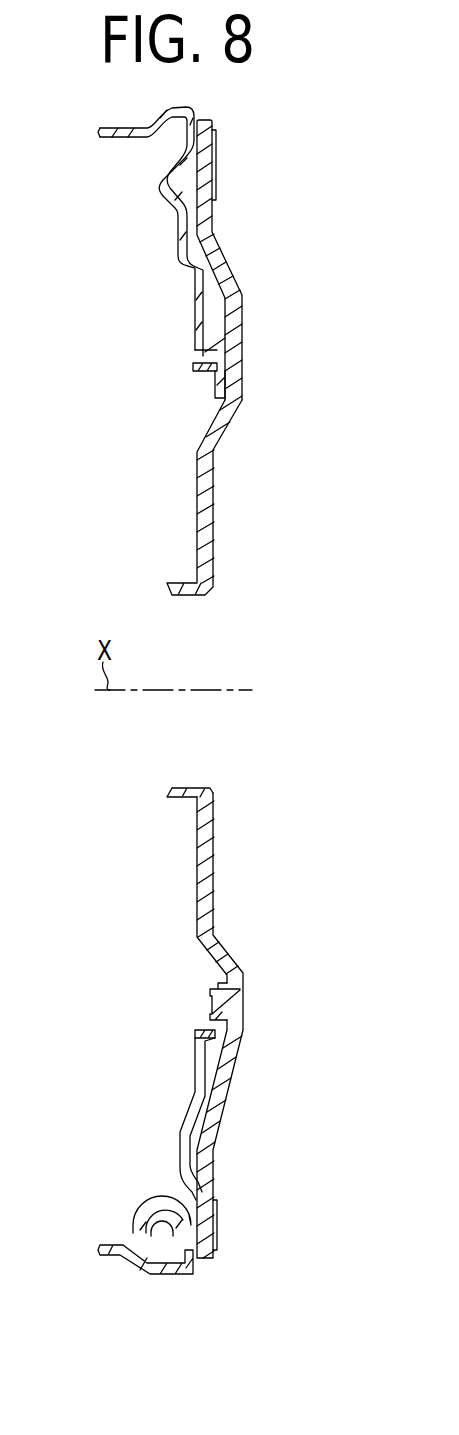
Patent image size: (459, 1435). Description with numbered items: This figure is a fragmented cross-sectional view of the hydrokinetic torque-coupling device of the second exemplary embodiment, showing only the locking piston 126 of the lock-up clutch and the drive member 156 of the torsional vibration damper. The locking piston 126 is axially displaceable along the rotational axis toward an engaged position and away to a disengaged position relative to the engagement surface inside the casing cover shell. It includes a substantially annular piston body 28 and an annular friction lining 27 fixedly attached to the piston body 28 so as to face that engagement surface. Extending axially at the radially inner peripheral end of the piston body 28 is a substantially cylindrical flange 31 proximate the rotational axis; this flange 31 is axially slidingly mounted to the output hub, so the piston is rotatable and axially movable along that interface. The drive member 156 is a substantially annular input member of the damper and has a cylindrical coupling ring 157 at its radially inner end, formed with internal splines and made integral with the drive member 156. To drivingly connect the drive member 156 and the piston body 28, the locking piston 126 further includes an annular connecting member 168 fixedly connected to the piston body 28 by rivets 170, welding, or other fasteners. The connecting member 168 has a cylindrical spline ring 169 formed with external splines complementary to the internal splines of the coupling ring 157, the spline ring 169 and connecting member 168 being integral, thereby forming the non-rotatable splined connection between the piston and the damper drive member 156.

The annular friction lining 27 is at (215, 157).
The drive member 156 is at (176, 305).
The coupling ring 157 is at (218, 348).
The cylindrical spline ring 169 is at (195, 367).
The annular connecting member 168 is at (217, 386).
The locking piston 126 is at (236, 500).
The cylindrical flange 31 is at (180, 793).
The piston body 28 is at (207, 855).
The rivets 170 is at (240, 1000).